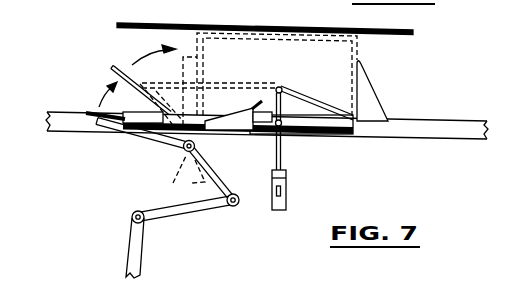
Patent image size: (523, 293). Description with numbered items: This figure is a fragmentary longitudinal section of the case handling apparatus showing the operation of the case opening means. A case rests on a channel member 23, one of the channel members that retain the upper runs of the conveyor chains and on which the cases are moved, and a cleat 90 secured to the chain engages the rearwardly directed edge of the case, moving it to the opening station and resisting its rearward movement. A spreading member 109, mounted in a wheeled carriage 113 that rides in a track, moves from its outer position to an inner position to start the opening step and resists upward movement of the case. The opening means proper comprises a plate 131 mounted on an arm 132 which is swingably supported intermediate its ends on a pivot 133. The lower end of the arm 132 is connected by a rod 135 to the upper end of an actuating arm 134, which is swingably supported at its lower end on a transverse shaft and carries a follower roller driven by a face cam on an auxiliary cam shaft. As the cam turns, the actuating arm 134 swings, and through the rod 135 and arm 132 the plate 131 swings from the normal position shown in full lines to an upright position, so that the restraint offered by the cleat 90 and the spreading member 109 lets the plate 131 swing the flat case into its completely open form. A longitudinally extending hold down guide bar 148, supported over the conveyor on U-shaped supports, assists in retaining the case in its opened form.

The channel member 23 is at (417, 121).
The cleat 90 is at (377, 101).
The spreading member 109 is at (283, 161).
The wheeled carriage 113 is at (286, 182).
The plate 131 is at (120, 63).
The arm 132 is at (133, 136).
The pivot 133 is at (200, 146).
The actuating arm 134 is at (143, 259).
The rod 135 is at (198, 207).
The hold down guide bar 148 is at (226, 24).